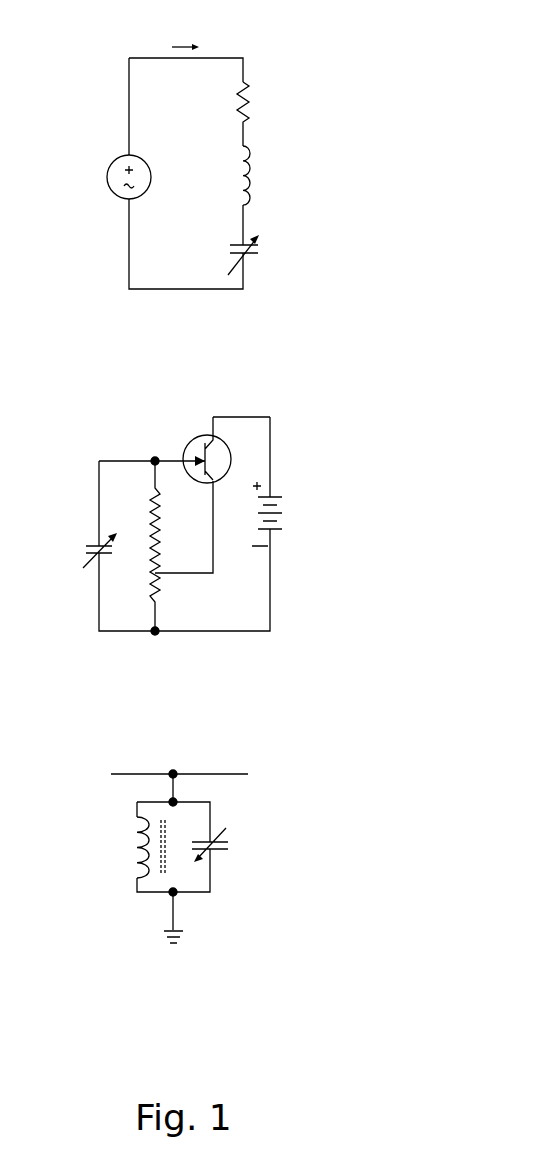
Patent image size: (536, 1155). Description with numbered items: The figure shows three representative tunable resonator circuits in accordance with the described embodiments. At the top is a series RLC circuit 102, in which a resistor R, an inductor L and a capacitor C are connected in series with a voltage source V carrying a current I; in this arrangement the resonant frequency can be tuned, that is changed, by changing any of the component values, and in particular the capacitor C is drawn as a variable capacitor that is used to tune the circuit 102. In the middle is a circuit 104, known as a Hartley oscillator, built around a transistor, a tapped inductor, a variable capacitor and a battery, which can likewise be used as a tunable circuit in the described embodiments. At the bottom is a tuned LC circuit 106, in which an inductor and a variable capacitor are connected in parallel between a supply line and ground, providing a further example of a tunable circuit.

The series RLC circuit 102 is at (334, 157).
The Hartley oscillator circuit 104 is at (324, 512).
The tuned LC circuit 106 is at (324, 833).